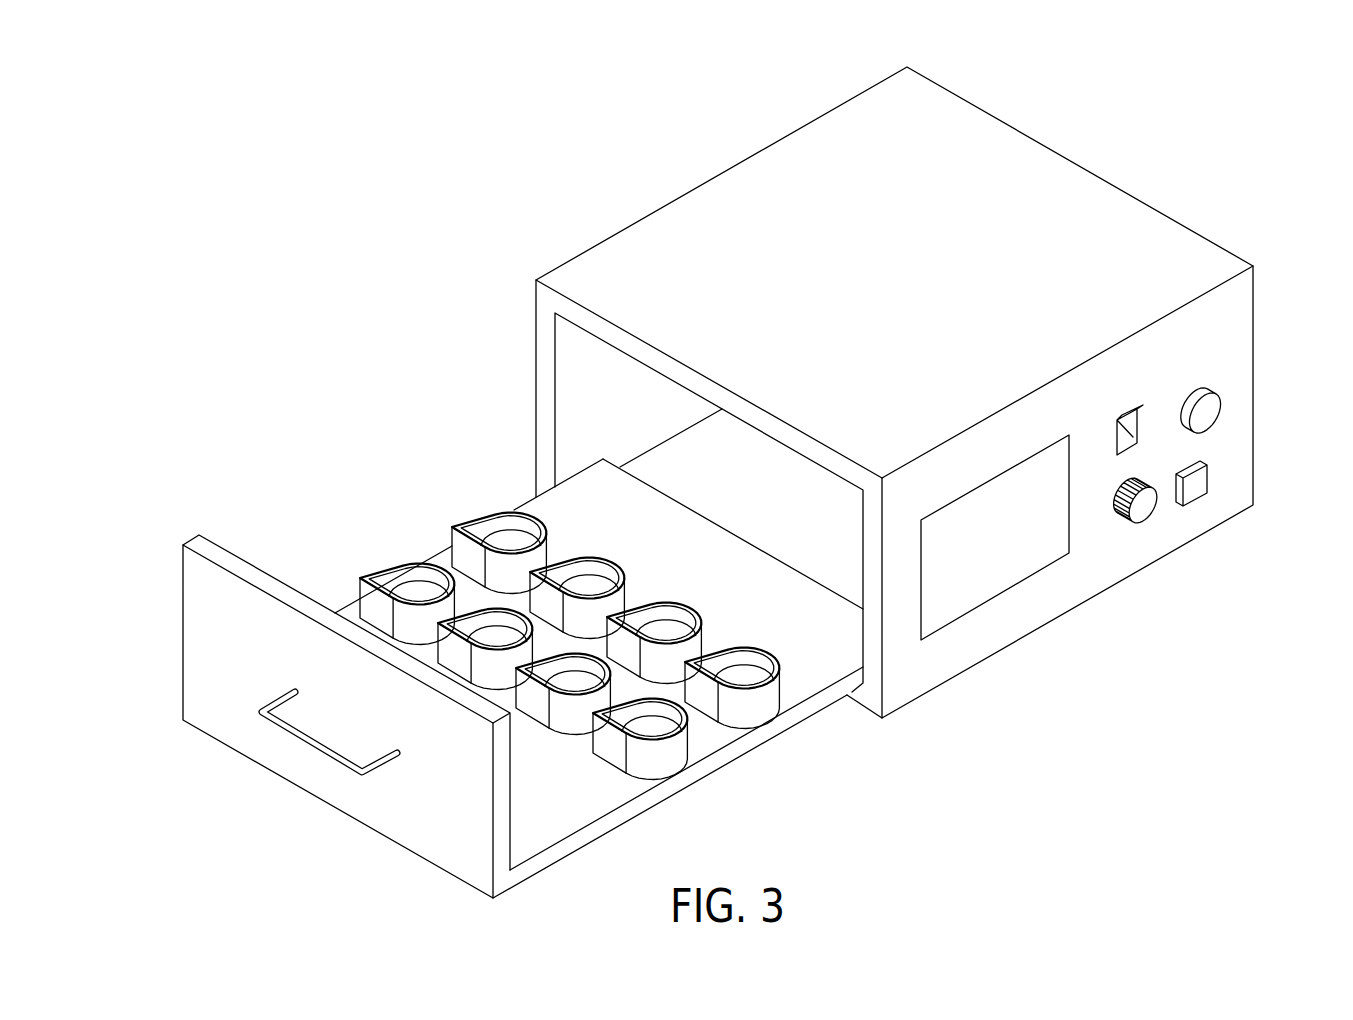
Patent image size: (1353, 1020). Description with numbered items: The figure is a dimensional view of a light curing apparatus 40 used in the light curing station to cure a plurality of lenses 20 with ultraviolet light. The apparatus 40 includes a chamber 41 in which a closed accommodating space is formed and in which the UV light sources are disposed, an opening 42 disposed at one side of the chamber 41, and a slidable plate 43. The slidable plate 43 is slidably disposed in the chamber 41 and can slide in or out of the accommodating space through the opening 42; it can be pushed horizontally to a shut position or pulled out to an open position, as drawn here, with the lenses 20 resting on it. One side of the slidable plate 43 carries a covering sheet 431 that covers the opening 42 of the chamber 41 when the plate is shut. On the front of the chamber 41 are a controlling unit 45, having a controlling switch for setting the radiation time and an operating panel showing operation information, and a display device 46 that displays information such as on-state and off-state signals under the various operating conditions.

The lenses 20 is at (508, 545).
The light curing apparatus 40 is at (898, 392).
The chamber 41 is at (1150, 252).
The opening 42 is at (579, 358).
The slidable plate 43 is at (524, 678).
The covering sheet 431 is at (288, 767).
The controlling unit 45 is at (995, 555).
The display device 46 is at (1203, 413).